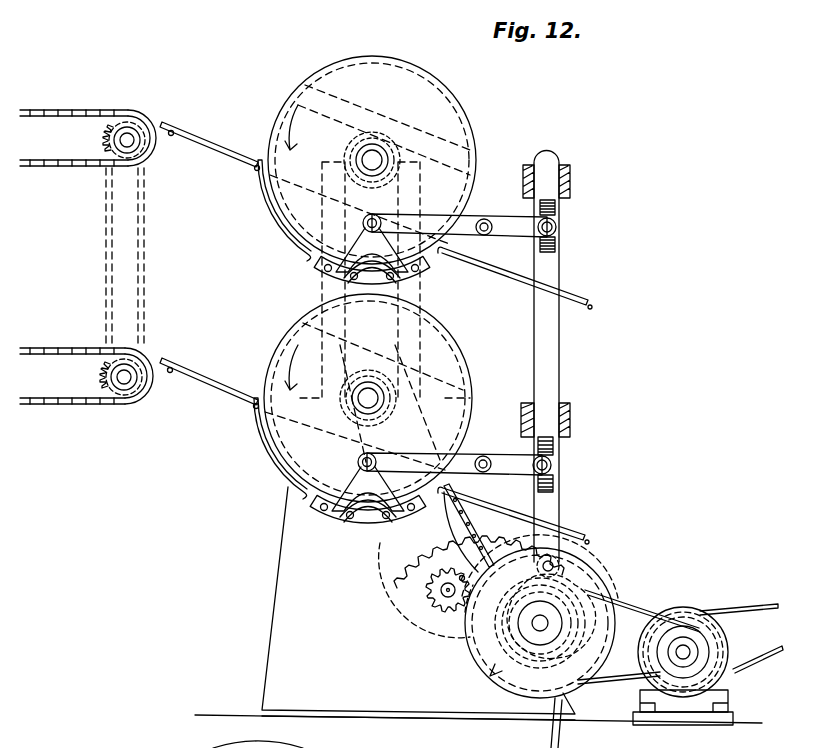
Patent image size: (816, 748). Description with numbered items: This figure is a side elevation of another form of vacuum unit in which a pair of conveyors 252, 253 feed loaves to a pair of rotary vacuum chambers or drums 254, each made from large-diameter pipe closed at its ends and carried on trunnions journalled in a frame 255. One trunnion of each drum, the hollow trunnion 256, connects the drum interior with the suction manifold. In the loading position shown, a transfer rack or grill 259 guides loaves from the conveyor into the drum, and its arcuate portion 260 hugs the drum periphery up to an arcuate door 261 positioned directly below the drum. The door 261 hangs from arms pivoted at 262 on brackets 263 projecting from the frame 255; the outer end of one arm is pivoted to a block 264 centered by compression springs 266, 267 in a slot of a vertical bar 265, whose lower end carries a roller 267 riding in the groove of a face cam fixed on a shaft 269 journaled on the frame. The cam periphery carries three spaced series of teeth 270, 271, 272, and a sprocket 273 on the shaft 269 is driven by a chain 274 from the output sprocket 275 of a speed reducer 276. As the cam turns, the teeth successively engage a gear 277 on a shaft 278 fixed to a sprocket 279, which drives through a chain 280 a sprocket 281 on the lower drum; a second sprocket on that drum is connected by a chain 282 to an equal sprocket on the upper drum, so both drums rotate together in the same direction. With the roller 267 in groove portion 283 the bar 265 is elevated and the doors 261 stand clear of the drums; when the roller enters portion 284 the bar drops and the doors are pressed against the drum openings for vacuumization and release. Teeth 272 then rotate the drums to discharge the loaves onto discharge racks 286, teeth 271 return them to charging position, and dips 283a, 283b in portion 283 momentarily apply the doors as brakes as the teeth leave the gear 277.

The conveyor 252 is at (63, 168).
The conveyor 253 is at (52, 402).
The rotary vacuum chamber or drum 254 is at (471, 119).
The frame 255 is at (292, 528).
The hollow trunnion 256 is at (374, 150).
The transfer rack or grill 259 is at (206, 382).
The arcuate portion 260 is at (270, 462).
The arcuate door 261 is at (354, 526).
The door supporting arm pivot 262 is at (404, 454).
The bracket 263 is at (470, 450).
The block 264 is at (560, 473).
The bar 265 is at (552, 366).
The compression spring 266 is at (553, 440).
The compression spring / roller 267 is at (559, 456).
The shaft 269 is at (538, 627).
The series of teeth 270 is at (465, 608).
The series of teeth 271 is at (452, 532).
The series of teeth 272 is at (557, 530).
The sprocket 273 is at (538, 655).
The chain 274 is at (620, 670).
The output sprocket 275 is at (682, 660).
The speed reducer 276 is at (697, 612).
The gear 277 is at (438, 596).
The shaft 278 is at (461, 580).
The sprocket 279 is at (418, 590).
The chain 280 is at (392, 553).
The sprocket 281 is at (401, 385).
The chain 282 is at (401, 188).
The cam groove portion 283 is at (592, 600).
The dip 283a is at (587, 612).
The dip 283b is at (562, 578).
The cam groove portion 284 is at (491, 642).
The discharge rack 286 is at (586, 546).